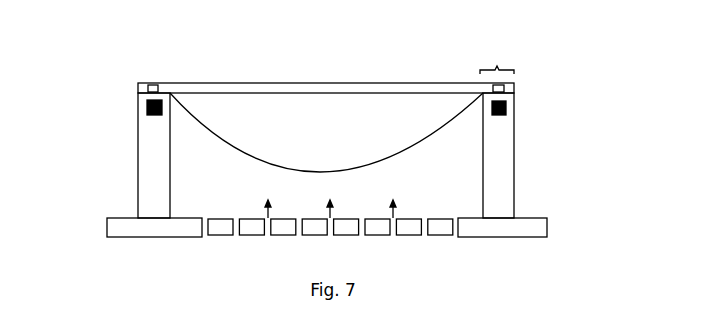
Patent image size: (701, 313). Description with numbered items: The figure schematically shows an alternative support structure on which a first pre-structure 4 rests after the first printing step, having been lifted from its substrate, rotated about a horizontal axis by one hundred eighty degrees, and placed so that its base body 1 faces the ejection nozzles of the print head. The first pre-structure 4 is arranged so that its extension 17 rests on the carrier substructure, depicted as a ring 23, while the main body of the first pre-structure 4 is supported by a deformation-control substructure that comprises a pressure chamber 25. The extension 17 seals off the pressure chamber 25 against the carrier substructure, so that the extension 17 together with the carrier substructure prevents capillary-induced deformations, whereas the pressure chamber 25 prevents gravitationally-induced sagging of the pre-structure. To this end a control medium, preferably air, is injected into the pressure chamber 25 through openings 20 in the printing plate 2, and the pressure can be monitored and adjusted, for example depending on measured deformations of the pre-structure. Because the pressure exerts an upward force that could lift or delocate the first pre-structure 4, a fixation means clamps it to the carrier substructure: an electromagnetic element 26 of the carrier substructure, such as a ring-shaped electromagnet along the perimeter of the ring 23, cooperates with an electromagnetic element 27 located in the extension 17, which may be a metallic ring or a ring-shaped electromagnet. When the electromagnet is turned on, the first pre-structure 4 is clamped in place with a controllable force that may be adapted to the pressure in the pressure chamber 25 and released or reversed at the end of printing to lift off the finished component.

The base body 1 is at (288, 83).
The printing plate 2 is at (128, 227).
The first pre-structure 4 is at (230, 123).
The extension 17 is at (497, 51).
The openings 20 is at (204, 232).
The ring 23 is at (140, 162).
The pressure chamber 25 is at (460, 182).
The electromagnetic element of carrier substructure 26 is at (139, 101).
The electromagnetic element of first pre-structure 27 is at (152, 85).